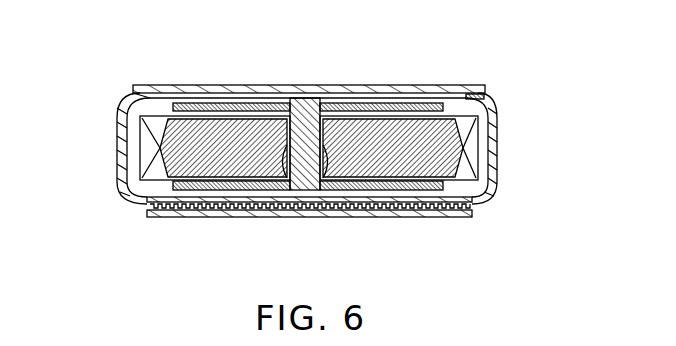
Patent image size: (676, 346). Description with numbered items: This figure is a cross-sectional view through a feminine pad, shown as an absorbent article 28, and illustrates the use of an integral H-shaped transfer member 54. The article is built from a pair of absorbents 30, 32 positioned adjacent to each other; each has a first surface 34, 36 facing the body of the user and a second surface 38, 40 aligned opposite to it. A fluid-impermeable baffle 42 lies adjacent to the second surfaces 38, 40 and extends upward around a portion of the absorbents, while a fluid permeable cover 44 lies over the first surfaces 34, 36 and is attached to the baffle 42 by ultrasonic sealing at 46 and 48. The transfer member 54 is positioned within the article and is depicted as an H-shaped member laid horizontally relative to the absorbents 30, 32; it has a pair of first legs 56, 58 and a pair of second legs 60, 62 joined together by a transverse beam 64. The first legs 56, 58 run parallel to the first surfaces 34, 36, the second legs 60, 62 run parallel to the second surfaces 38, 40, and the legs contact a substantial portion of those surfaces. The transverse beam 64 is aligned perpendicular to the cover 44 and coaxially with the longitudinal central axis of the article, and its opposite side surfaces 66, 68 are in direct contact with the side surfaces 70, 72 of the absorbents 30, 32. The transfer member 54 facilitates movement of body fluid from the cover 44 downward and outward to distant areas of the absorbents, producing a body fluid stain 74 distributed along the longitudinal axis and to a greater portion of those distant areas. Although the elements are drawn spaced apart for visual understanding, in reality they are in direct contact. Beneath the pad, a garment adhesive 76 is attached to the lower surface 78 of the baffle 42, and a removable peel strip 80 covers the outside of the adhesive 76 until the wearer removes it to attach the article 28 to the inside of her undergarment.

The absorbent article 28 is at (130, 53).
The absorbent 30 is at (133, 124).
The absorbent 32 is at (493, 135).
The first surface 34 is at (250, 103).
The first surface 36 is at (430, 117).
The second surface 38 is at (133, 197).
The second surface 40 is at (487, 197).
The fluid-impermeable baffle 42 is at (480, 208).
The fluid permeable cover 44 is at (182, 84).
The ultrasonic seal 46 is at (152, 85).
The ultrasonic seal 48 is at (470, 85).
The transfer member 54 is at (352, 82).
The first leg 56 is at (218, 103).
The first leg 58 is at (386, 97).
The second leg 60 is at (203, 192).
The second leg 62 is at (358, 190).
The transverse beam 64 is at (309, 104).
The side surface 66 is at (277, 185).
The side surface 68 is at (332, 185).
The side surface 70 is at (290, 104).
The side surface 72 is at (327, 104).
The body fluid stain 74 is at (160, 151).
The garment adhesive 76 is at (450, 217).
The lower surface 78 is at (143, 207).
The removable peel strip 80 is at (390, 218).